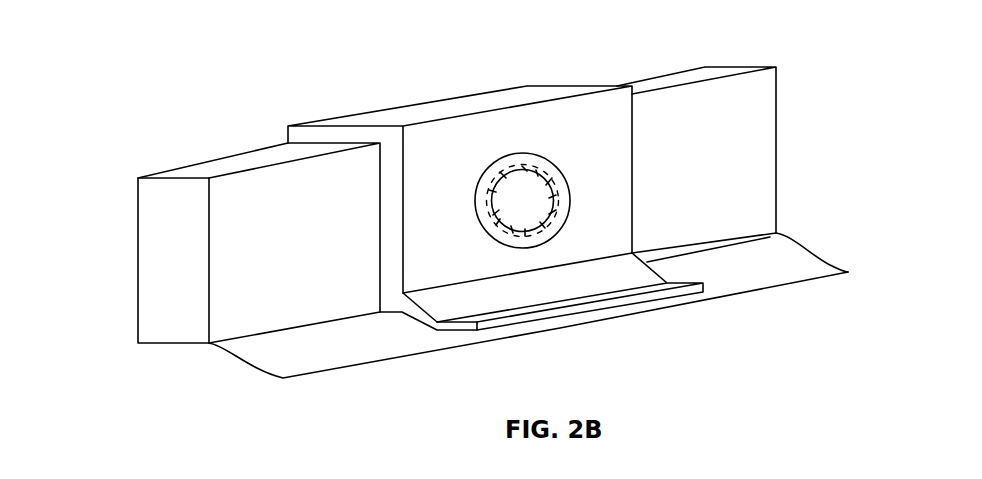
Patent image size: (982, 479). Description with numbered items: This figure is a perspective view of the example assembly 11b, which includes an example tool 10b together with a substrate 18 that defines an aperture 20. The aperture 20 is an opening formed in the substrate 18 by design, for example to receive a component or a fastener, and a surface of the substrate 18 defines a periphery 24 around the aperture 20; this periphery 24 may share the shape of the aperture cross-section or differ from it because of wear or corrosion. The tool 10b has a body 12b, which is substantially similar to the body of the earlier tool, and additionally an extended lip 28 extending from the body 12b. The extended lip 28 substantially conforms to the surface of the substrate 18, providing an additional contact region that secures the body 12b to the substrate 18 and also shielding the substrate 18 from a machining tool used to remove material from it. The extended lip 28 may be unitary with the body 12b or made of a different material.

The example assembly 11b is at (122, 66).
The body 12b is at (297, 133).
The tool 10b is at (527, 88).
The substrate 18 is at (735, 146).
The aperture 20 is at (523, 205).
The periphery 24 is at (542, 230).
The extended lip 28 is at (523, 293).